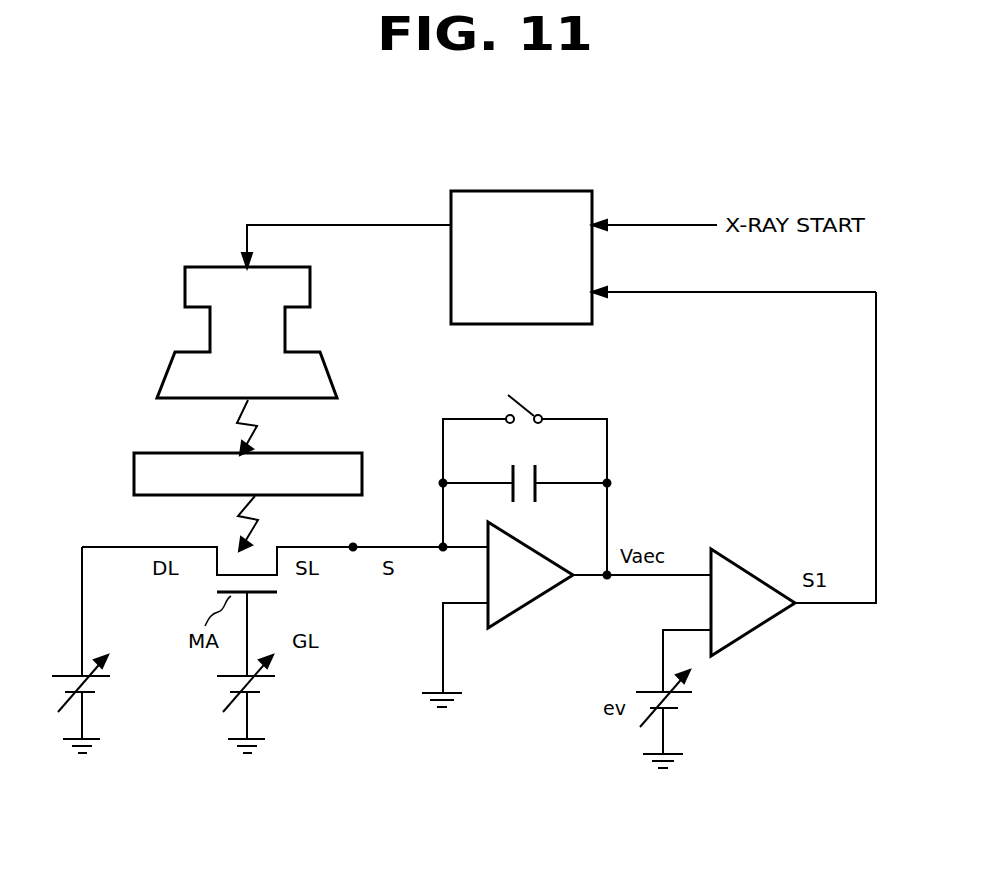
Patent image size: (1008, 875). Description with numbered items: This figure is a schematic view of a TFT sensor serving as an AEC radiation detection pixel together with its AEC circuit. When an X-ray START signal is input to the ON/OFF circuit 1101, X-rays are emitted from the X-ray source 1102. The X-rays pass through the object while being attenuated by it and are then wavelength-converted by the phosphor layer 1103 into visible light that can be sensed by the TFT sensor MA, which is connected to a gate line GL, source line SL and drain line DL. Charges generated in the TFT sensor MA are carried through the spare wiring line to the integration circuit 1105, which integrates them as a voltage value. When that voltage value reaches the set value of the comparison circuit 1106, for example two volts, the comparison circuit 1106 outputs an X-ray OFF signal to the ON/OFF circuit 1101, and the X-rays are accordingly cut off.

The ON/OFF circuit 1101 is at (553, 191).
The X-ray source 1102 is at (311, 289).
The phosphor layer 1103 is at (366, 432).
The integration circuit 1105 is at (548, 593).
The comparison circuit 1106 is at (768, 622).